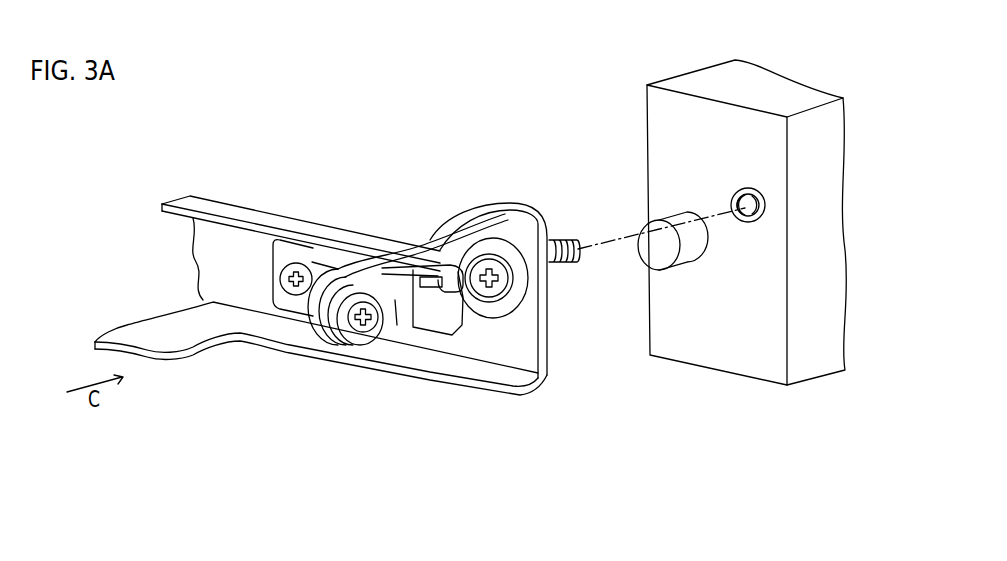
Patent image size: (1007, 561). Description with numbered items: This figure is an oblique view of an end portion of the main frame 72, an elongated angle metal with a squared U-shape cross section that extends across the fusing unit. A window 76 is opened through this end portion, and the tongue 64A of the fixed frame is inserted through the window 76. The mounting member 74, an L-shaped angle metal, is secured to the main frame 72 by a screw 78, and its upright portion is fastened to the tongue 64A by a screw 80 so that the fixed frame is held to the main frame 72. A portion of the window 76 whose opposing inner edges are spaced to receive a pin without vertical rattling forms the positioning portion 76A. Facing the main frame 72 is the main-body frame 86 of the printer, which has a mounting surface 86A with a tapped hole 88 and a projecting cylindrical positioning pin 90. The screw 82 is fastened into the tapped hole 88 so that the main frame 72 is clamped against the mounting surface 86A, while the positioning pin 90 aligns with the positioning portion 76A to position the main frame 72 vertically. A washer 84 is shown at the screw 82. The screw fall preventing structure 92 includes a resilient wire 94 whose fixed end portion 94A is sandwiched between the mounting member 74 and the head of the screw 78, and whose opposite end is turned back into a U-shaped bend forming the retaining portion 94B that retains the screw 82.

The main frame 72 is at (190, 202).
The mounting member 74 is at (282, 250).
The window 76 is at (430, 311).
The positioning portion 76A is at (449, 317).
The screw 78 is at (297, 264).
The screw 80 is at (360, 335).
The screw 82 is at (515, 239).
The washer 84 is at (513, 257).
The main-body frame 86 is at (687, 72).
The mounting surface 86A is at (748, 352).
The tapped hole 88 is at (729, 187).
The positioning pin 90 is at (657, 257).
The screw fall preventing structure 92 is at (347, 111).
The wire 94 is at (420, 260).
The fixed end portion 94A is at (313, 251).
The retaining portion 94B is at (517, 300).
The tongue 64A is at (403, 321).